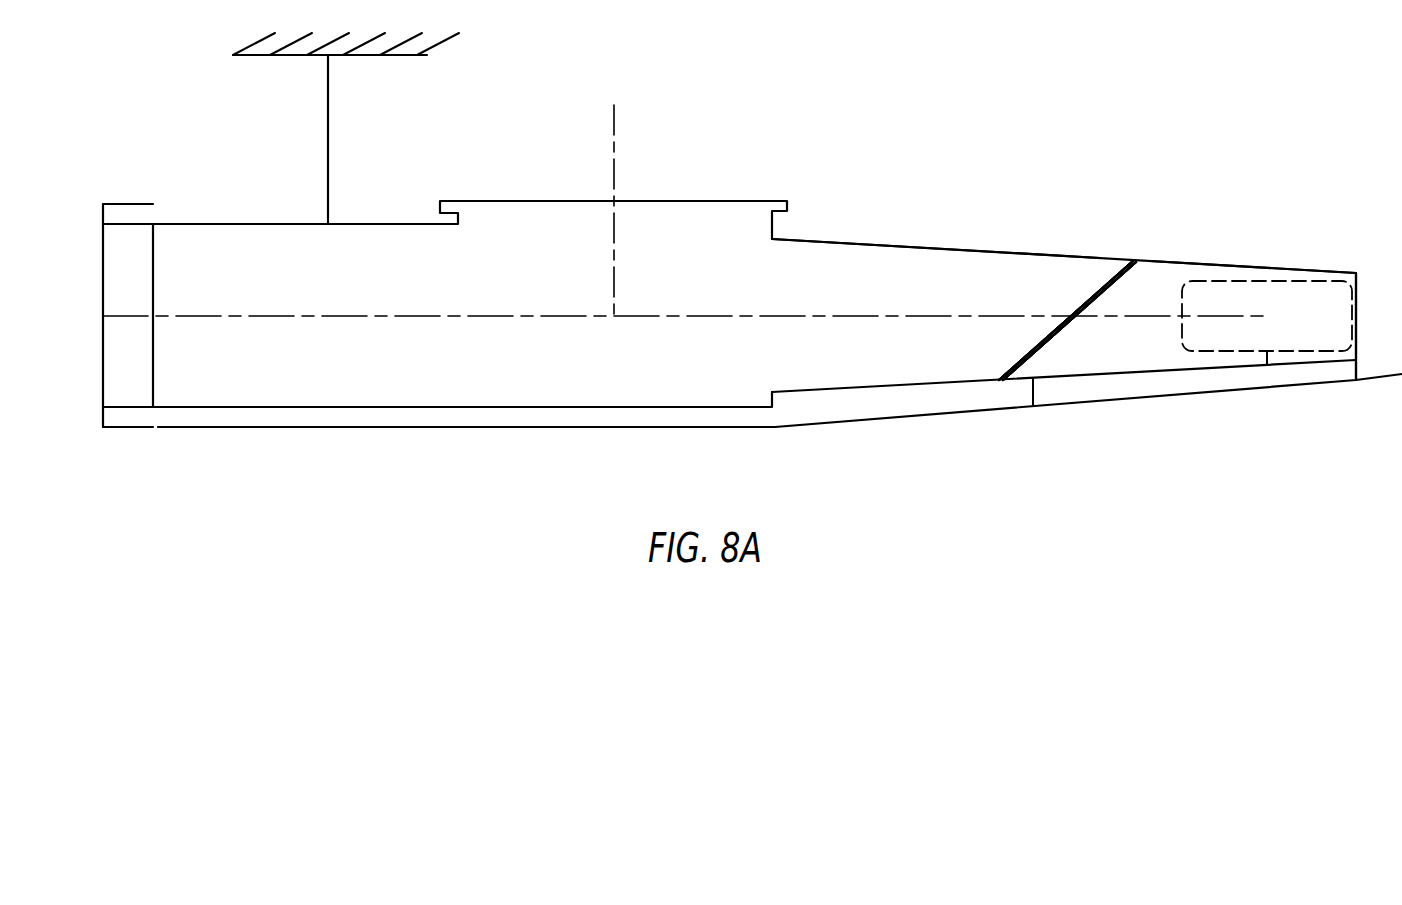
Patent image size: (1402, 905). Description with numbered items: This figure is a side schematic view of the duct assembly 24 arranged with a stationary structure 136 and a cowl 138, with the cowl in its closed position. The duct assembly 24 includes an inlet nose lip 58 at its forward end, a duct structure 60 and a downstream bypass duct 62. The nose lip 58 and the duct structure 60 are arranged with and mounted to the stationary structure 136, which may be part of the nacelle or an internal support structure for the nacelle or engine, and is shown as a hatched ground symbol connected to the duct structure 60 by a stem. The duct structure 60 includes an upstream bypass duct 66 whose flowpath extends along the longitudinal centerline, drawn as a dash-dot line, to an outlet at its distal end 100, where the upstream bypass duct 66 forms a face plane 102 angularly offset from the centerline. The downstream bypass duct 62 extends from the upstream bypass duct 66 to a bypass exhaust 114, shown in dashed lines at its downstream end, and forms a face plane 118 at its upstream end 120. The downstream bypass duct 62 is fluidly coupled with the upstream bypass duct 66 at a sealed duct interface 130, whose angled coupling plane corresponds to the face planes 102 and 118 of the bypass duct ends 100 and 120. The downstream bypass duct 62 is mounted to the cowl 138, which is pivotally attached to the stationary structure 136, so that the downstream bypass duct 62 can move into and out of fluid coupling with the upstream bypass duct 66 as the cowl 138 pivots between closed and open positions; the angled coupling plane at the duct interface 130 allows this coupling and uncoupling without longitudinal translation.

The duct assembly 24 is at (1074, 101).
The inlet nose lip 58 is at (135, 196).
The stationary structure 136 is at (372, 57).
The duct structure 60 is at (850, 232).
The upstream bypass duct 66 is at (938, 247).
The downstream bypass duct 62 is at (1229, 251).
The cowl 138 is at (938, 415).
The duct interface 130 is at (1132, 250).
The face plane 118 is at (1092, 288).
The upstream end 120 is at (1067, 289).
The distal end 100 is at (1047, 343).
The face plane 102 is at (1067, 358).
The bypass exhaust 114 is at (1267, 365).